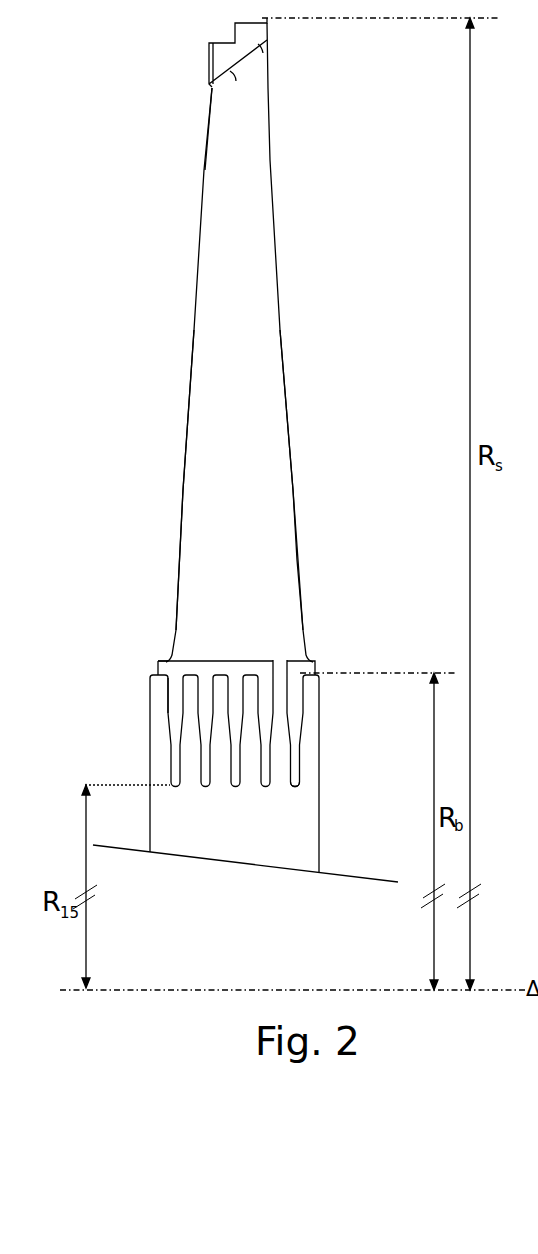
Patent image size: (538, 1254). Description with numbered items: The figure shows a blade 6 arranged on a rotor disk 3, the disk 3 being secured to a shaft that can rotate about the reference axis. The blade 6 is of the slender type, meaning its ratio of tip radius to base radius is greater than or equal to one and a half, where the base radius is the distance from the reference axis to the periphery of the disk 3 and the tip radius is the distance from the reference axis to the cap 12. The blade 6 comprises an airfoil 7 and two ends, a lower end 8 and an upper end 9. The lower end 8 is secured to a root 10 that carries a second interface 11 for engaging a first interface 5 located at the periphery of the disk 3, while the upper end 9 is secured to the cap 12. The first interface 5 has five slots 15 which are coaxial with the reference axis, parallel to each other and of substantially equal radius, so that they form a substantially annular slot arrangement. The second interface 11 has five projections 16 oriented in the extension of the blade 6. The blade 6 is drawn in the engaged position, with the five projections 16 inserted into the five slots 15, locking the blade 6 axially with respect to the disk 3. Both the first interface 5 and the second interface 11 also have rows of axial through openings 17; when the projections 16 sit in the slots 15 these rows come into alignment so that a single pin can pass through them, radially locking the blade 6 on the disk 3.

The disk 3 is at (320, 858).
The first interface 5 is at (321, 720).
The blade 6 is at (286, 372).
The airfoil 7 is at (268, 463).
The lower end 8 is at (272, 600).
The upper end 9 is at (253, 83).
The root 10 is at (313, 665).
The second interface 11 is at (157, 662).
The cap 12 is at (268, 33).
The slots 15 is at (298, 758).
The projections 16 is at (173, 707).
The axial through openings 17 is at (537, 738).